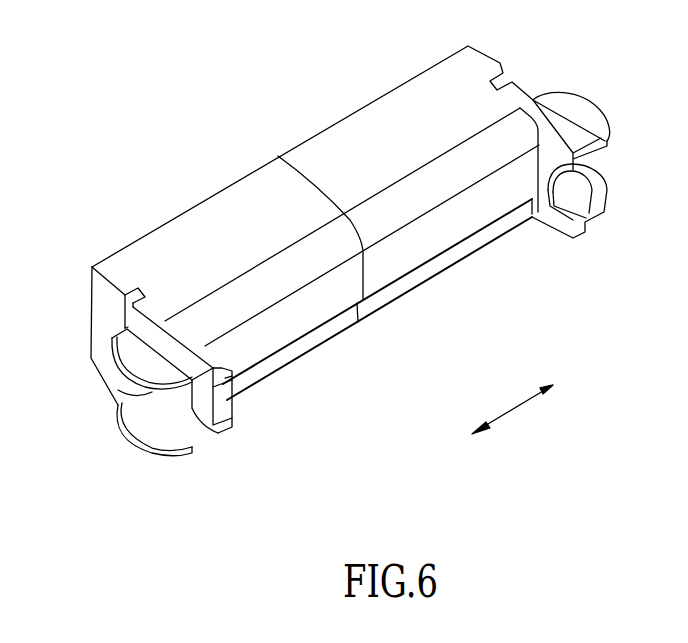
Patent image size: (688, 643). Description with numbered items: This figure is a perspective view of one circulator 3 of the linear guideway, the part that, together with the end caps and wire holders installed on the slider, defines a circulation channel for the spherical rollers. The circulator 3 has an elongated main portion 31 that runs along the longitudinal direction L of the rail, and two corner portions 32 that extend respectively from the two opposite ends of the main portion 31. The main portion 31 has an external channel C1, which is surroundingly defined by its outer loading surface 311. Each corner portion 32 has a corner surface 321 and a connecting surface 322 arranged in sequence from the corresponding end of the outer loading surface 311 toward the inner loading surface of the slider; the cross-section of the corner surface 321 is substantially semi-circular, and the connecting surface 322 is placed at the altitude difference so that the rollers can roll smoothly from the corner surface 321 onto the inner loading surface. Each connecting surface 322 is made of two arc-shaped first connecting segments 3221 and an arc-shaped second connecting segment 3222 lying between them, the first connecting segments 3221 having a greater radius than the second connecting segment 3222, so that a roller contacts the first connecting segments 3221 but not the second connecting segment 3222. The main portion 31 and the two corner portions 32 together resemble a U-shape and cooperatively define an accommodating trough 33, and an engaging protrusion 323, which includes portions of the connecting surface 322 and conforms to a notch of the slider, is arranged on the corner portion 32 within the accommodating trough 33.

The circulator 3 is at (102, 30).
The main portion 31 is at (228, 188).
The corner portion 32 is at (572, 162).
The accommodating trough 33 is at (435, 296).
The outer loading surface 311 is at (130, 393).
The corner surface 321 is at (142, 430).
The connecting surface 322 is at (250, 449).
The engaging protrusion 323 is at (552, 213).
The first connecting segment 3221 is at (213, 412).
The second connecting segment 3222 is at (215, 392).
The external channel C1 is at (112, 353).
The longitudinal direction L is at (512, 403).